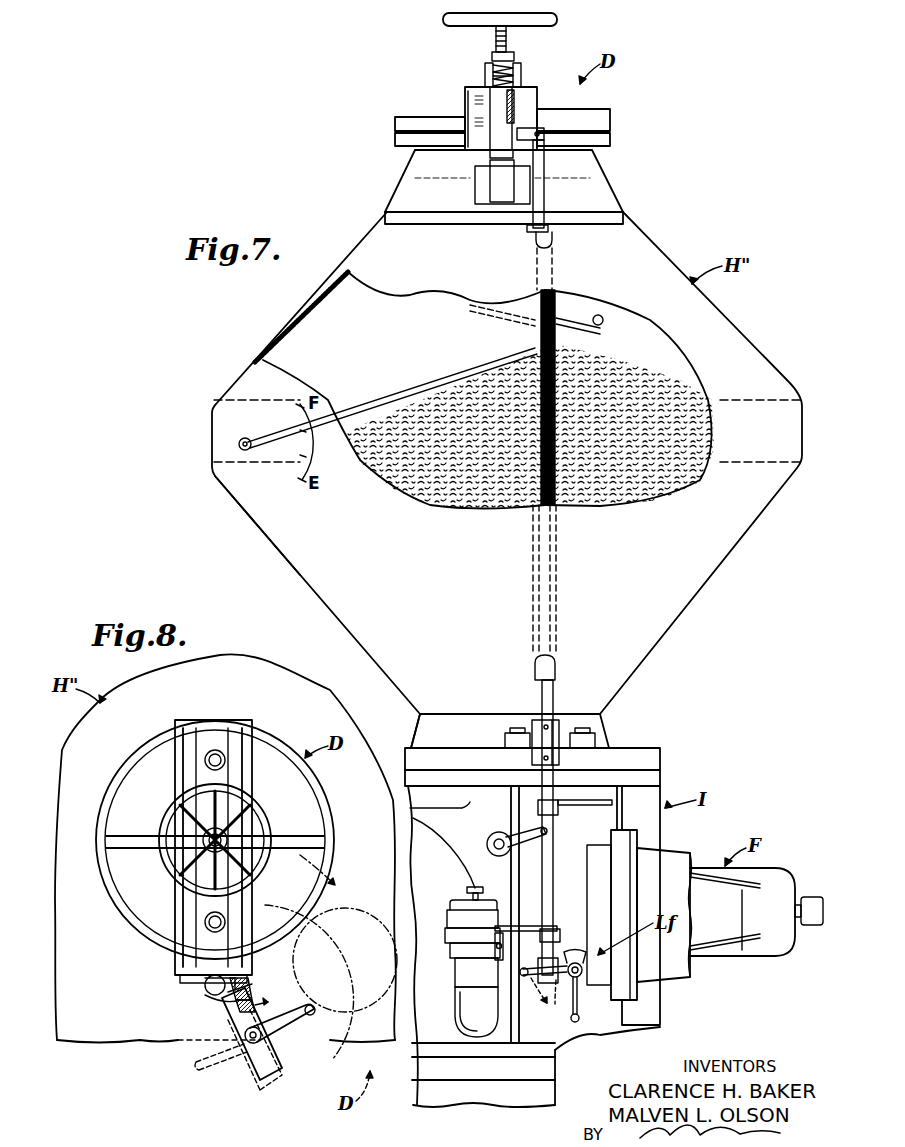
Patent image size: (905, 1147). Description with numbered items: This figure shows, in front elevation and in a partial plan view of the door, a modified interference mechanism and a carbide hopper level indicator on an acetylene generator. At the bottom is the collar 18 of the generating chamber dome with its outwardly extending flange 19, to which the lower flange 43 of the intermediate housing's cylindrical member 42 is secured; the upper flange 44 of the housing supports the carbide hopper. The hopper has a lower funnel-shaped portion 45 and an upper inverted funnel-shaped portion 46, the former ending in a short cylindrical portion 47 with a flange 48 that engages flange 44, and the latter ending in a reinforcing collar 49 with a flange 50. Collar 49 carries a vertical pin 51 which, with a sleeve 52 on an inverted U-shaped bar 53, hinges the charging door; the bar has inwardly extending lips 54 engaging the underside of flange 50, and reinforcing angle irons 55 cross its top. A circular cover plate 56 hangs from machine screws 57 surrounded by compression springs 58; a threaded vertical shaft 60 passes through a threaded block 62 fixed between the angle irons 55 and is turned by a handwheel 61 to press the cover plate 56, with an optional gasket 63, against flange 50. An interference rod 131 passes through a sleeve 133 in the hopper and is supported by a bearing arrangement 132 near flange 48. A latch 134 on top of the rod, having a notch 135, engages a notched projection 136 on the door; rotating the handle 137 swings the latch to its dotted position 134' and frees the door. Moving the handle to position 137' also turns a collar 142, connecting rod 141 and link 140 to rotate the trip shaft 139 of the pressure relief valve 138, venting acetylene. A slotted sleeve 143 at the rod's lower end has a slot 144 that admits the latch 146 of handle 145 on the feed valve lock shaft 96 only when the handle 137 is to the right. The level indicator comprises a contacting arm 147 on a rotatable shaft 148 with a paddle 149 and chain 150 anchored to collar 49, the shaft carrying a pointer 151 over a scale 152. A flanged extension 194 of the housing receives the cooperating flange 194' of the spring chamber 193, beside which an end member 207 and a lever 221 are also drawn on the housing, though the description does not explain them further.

In FIG. 7, the collar 18 is at (487, 1093).
In FIG. 7, the flange 19 is at (540, 1069).
In FIG. 7, the cylindrical member 42 is at (625, 826).
In FIG. 7, the lower flange 43 is at (491, 1051).
In FIG. 7, the upper flange 44 is at (645, 779).
In FIG. 7, the lower funnel-shaped portion 45 is at (300, 566).
In FIG. 7, the upper inverted funnel-shaped portion 46 is at (725, 346).
In FIG. 8, the upper inverted funnel-shaped portion 46 is at (295, 690).
In FIG. 7, the short cylindrical portion 47 is at (420, 733).
In FIG. 7, the hopper lower flange 48 is at (640, 758).
In FIG. 7, the reinforcing collar 49 is at (590, 161).
In FIG. 7, the collar flange 50 is at (400, 146).
In FIG. 7, the vertical pin 51 is at (516, 161).
In FIG. 8, the vertical pin 51 is at (200, 995).
In FIG. 7, the sleeve 52 is at (514, 102).
In FIG. 8, the sleeve 52 is at (205, 986).
In FIG. 7, the inverted U-shaped bar 53 is at (465, 103).
In FIG. 8, the inverted U-shaped bar 53 is at (216, 735).
In FIG. 7, the inwardly extending lips 54 is at (460, 150).
In FIG. 7, the reinforcing angle irons 55 is at (485, 70).
In FIG. 8, the reinforcing angle irons 55 is at (196, 781).
In FIG. 7, the circular cover plate 56 is at (412, 122).
In FIG. 8, the circular cover plate 56 is at (126, 787).
In FIG. 7, the machine screws 57 is at (494, 57).
In FIG. 8, the machine screws 57 is at (226, 761).
In FIG. 7, the compression springs 58 is at (512, 76).
In FIG. 7, the vertical shaft 60 is at (506, 44).
In FIG. 8, the vertical shaft 60 is at (222, 839).
In FIG. 7, the handwheel 61 is at (556, 20).
In FIG. 8, the handwheel 61 is at (160, 825).
In FIG. 7, the threaded block 62 is at (493, 79).
In FIG. 8, the threaded block 62 is at (205, 853).
In FIG. 7, the gasket 63 is at (396, 133).
In FIG. 7, the shaft of carbide feed valve lock 96 is at (578, 996).
In FIG. 7, the interference rod 131 is at (545, 187).
In FIG. 8, the interference rod 131 is at (262, 1001).
In FIG. 7, the journal and collar bearing arrangement 132 is at (536, 726).
In FIG. 7, the sleeve 133 is at (554, 237).
In FIG. 7, the latch 134 is at (476, 151).
In FIG. 8, the latch 134 is at (235, 1034).
In FIG. 8, the dotted position of latch 134' is at (248, 1053).
In FIG. 7, the notch 135 is at (556, 431).
In FIG. 8, the notch 135 is at (236, 1006).
In FIG. 7, the notched projection 136 is at (544, 128).
In FIG. 8, the notched projection 136 is at (252, 985).
In FIG. 7, the handle 137 is at (575, 818).
In FIG. 8, the handle 137 is at (298, 1024).
In FIG. 8, the dotted position of handle 137' is at (201, 1069).
In FIG. 7, the acetylene pressure relief valve 138 is at (457, 910).
In FIG. 7, the shaft of trip mechanism 139 is at (496, 948).
In FIG. 7, the link 140 is at (485, 935).
In FIG. 7, the connecting rod 141 is at (530, 926).
In FIG. 7, the collar 142 is at (560, 935).
In FIG. 7, the slotted sleeve 143 is at (538, 963).
In FIG. 7, the slot 144 is at (553, 1003).
In FIG. 7, the handle 145 is at (527, 988).
In FIG. 7, the latch 146 is at (582, 962).
In FIG. 7, the carbide surface contacting arm 147 is at (445, 378).
In FIG. 7, the horizontal rotatable shaft 148 is at (238, 444).
In FIG. 7, the paddle 149 is at (598, 330).
In FIG. 7, the chain 150 is at (497, 318).
In FIG. 7, the pointer 151 is at (280, 440).
In FIG. 7, the scale 152 is at (320, 446).
In FIG. 7, the spring chamber 193 is at (742, 956).
In FIG. 7, the flanged extension 194 is at (630, 943).
In FIG. 7, the cooperating flange 194' is at (643, 926).
In FIG. 7, the nut 207 is at (812, 926).
In FIG. 7, the lever 221 is at (528, 836).